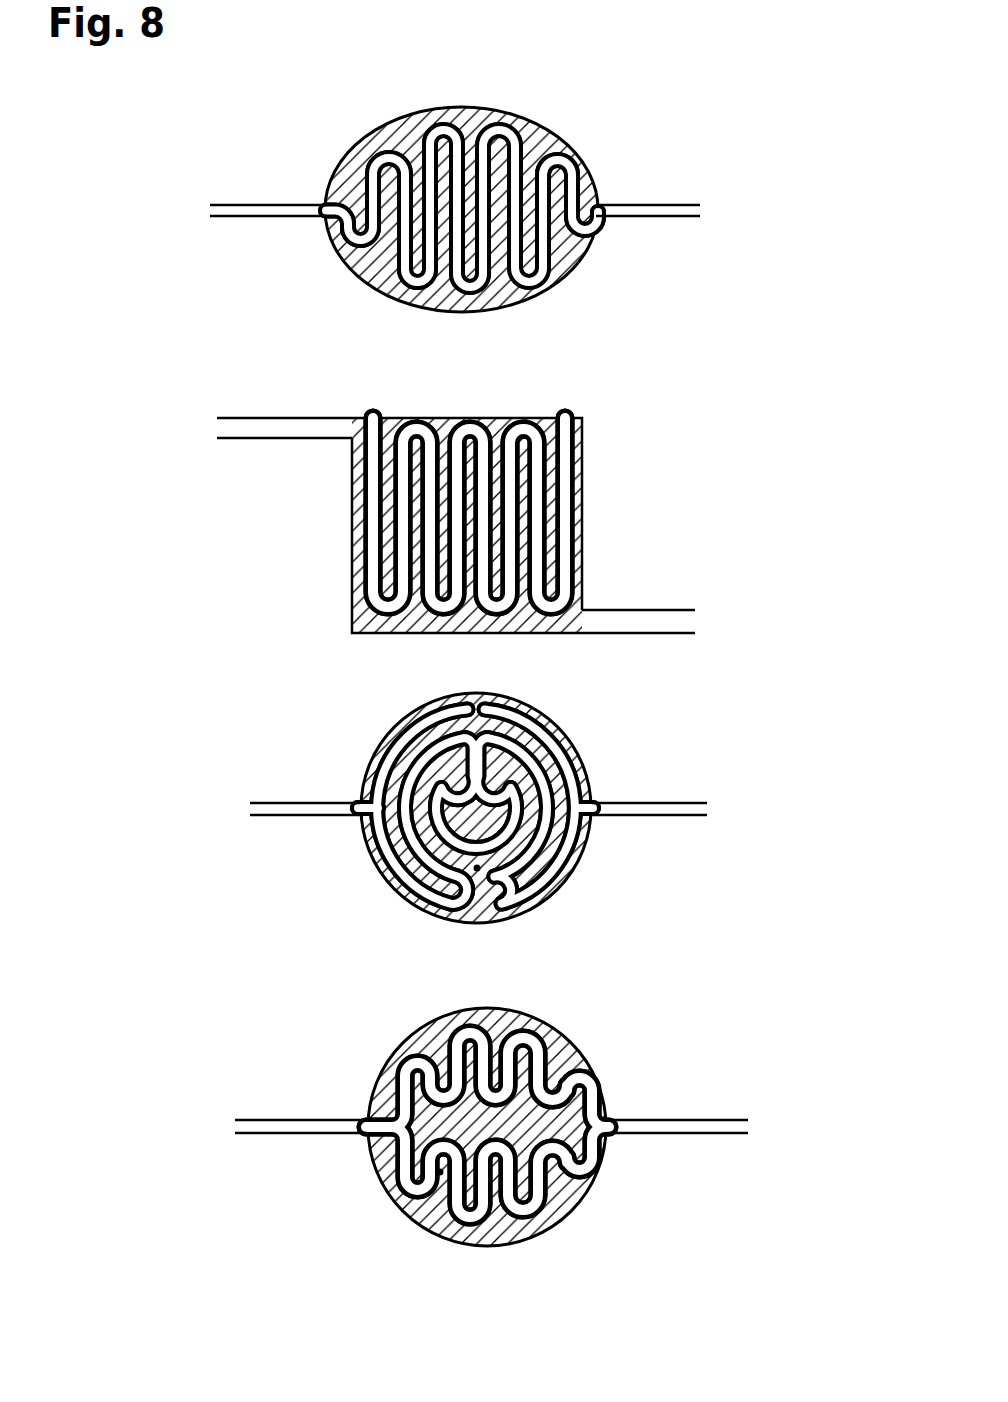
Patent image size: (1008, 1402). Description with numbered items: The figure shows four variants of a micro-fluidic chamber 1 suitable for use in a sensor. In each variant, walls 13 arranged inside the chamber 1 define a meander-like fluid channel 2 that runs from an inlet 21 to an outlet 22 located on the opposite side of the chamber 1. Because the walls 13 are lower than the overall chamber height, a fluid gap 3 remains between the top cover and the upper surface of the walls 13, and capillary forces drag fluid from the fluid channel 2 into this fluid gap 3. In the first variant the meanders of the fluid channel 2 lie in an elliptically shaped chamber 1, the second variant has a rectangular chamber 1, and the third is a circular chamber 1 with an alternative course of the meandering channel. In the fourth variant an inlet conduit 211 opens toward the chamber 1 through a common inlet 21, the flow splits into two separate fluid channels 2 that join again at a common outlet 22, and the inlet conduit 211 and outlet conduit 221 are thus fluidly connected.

The micro-fluidic chamber 1 is at (597, 104).
The fluid channel 2 is at (347, 240).
The fluid gap 3 is at (388, 263).
The walls 13 is at (418, 162).
The inlet 21 is at (330, 206).
The outlet 22 is at (597, 208).
The inlet conduit 211 is at (307, 1124).
The outlet conduit 221 is at (650, 1142).